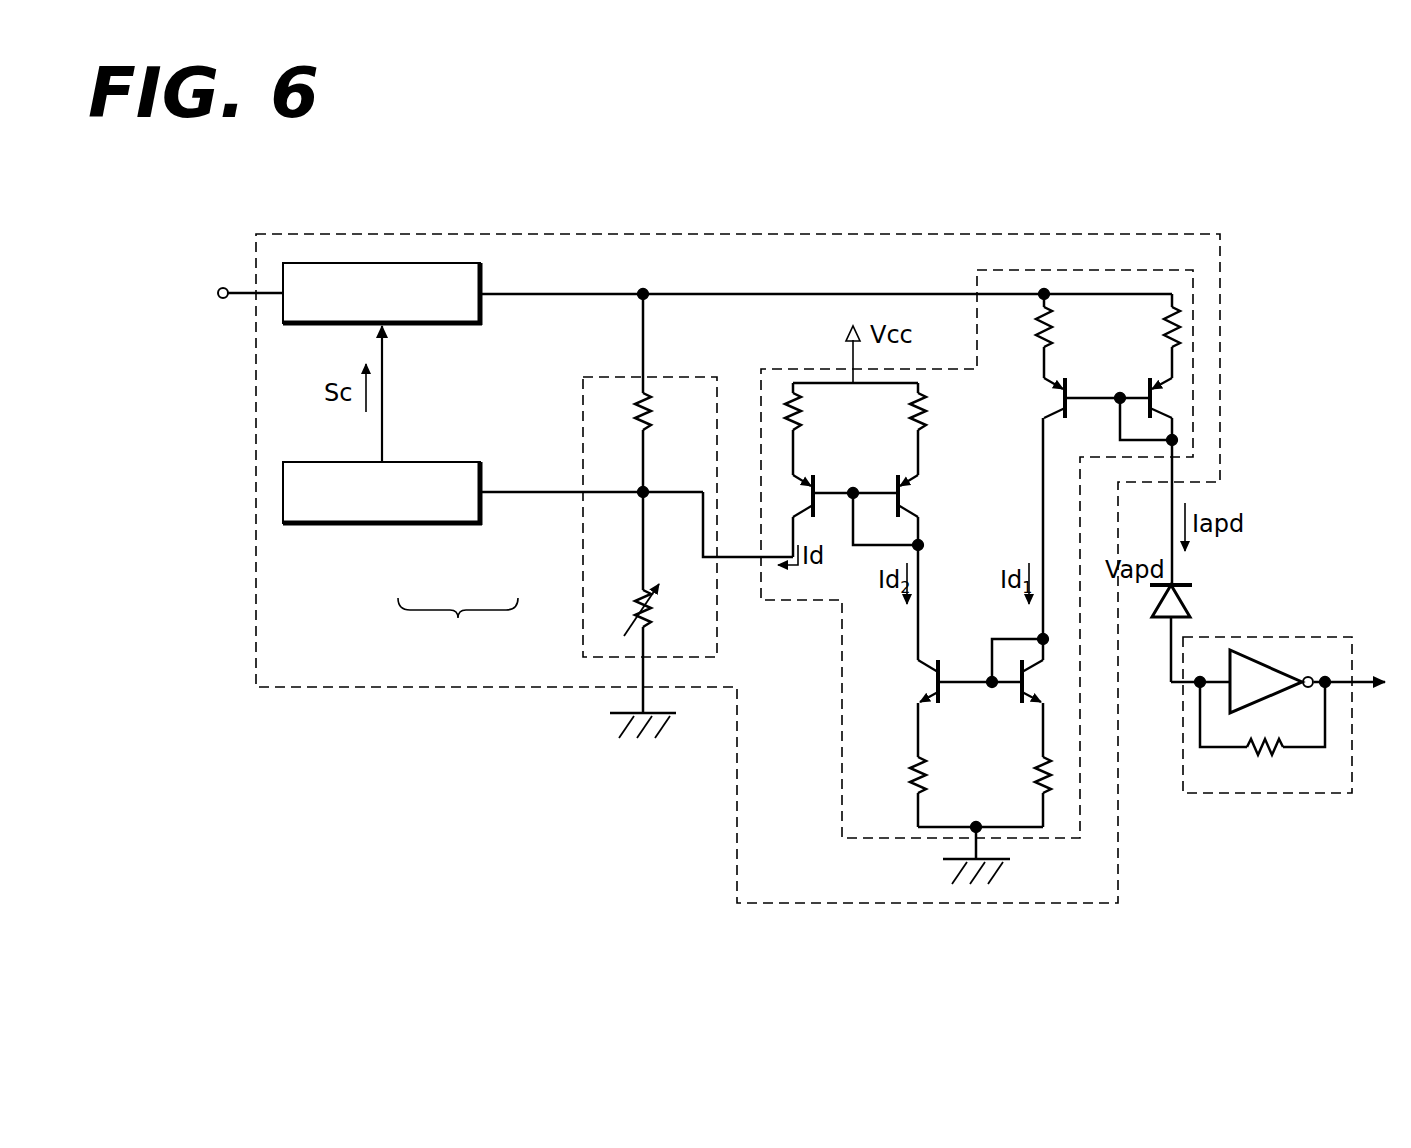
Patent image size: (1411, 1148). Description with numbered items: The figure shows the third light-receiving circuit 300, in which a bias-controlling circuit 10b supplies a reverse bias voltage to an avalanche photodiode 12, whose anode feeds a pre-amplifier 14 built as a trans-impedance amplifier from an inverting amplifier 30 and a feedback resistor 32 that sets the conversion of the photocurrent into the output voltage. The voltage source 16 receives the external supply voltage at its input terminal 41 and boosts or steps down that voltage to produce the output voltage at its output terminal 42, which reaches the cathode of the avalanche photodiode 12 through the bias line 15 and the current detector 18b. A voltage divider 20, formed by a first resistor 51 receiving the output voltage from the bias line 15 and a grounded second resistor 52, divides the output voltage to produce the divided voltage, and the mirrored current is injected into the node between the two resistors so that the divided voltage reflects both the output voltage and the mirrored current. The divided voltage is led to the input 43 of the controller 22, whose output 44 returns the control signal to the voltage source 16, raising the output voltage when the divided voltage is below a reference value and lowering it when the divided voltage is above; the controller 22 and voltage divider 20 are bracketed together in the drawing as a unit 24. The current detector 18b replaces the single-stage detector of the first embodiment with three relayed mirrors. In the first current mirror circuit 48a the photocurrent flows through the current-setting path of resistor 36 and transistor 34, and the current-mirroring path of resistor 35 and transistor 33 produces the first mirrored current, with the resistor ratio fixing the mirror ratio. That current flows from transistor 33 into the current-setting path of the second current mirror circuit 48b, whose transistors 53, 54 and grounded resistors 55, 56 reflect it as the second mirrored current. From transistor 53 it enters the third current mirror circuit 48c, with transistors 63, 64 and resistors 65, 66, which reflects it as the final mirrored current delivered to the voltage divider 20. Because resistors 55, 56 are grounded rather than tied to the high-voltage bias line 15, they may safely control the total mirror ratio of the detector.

The light-receiving circuit 300 is at (1303, 221).
The bias-controlling circuit 10b is at (1080, 232).
The input terminal 41 is at (224, 287).
The voltage source 16 is at (383, 262).
The output terminal 42 is at (483, 300).
The bias line 15 is at (905, 293).
The output of the controller 44 is at (385, 460).
The controller 22 is at (412, 525).
The input of the controller 43 is at (486, 483).
The voltage control unit 24 is at (458, 623).
The voltage divider 20 is at (583, 548).
The first resistor 51 is at (650, 412).
The second resistor 52 is at (635, 631).
The third current mirror circuit 48c is at (822, 580).
The resistor 65 is at (790, 406).
The resistor 66 is at (929, 398).
The transistor 63 is at (807, 483).
The transistor 64 is at (903, 486).
The second current mirror circuit 48b is at (892, 810).
The transistor 53 is at (945, 661).
The transistor 54 is at (1018, 693).
The resistor 55 is at (917, 760).
The resistor 56 is at (1050, 787).
The current detector 18b is at (1195, 343).
The first current mirror circuit 48a is at (1177, 387).
The resistor 35 is at (1038, 316).
The resistor 36 is at (1181, 315).
The transistor 33 is at (1067, 420).
The transistor 34 is at (1150, 378).
The avalanche photodiode 12 is at (1184, 603).
The pre-amplifier 14 is at (1353, 748).
The inverting amplifier 30 is at (1257, 675).
The feedback resistor 32 is at (1252, 757).